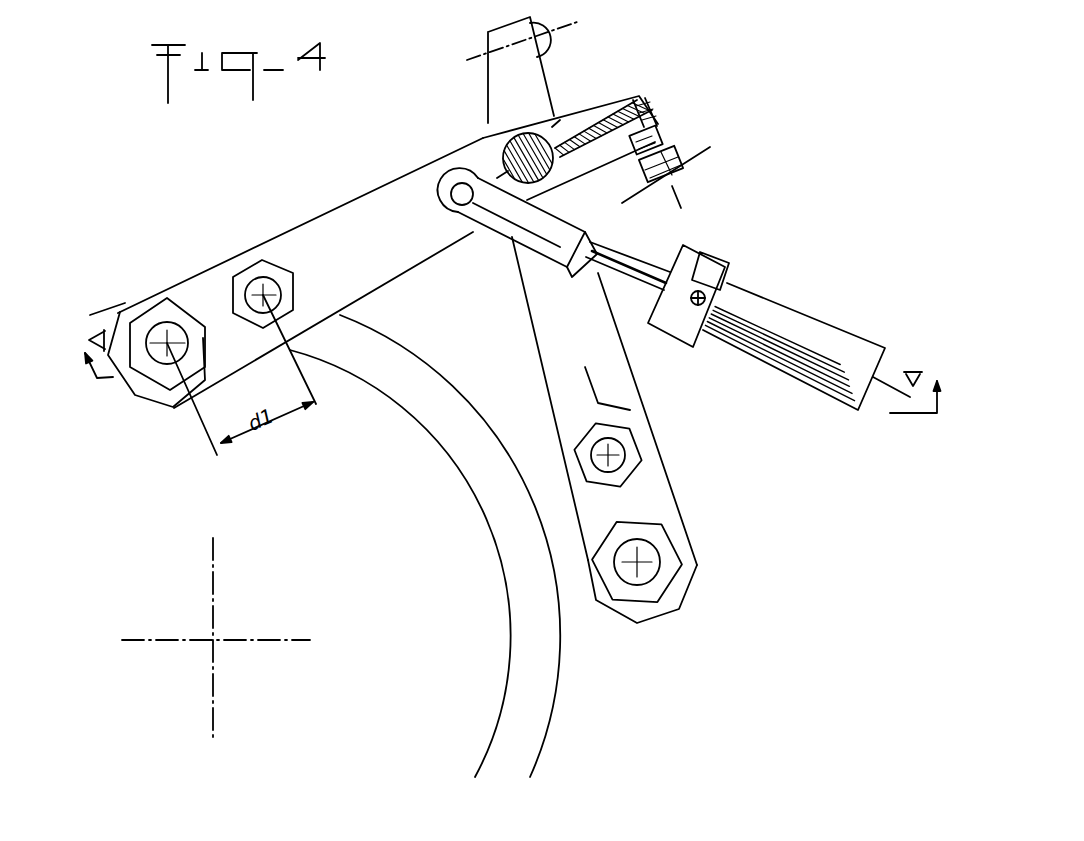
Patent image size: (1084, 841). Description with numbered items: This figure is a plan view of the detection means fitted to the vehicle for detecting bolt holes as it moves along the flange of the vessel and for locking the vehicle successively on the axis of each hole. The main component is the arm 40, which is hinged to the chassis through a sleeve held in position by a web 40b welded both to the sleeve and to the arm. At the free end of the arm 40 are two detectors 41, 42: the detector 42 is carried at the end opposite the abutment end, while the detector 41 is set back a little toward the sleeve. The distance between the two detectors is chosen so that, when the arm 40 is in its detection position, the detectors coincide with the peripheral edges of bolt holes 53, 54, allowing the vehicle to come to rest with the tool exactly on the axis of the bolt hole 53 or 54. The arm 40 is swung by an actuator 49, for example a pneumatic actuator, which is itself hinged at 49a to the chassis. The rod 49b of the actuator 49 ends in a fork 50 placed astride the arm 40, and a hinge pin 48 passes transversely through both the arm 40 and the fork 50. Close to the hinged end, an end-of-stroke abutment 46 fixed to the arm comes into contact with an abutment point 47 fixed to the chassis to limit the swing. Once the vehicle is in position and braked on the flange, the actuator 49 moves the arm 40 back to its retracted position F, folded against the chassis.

The arm 40 is at (311, 240).
The web 40b is at (578, 140).
The detector 41 is at (244, 284).
The detector 42 is at (155, 324).
The end-of-stroke abutment 46 is at (660, 132).
The abutment point 47 is at (681, 158).
The hinge pin 48 is at (458, 192).
The actuator 49 is at (713, 270).
The hinge of the actuator 49a is at (727, 294).
The rod 49b is at (623, 258).
The fork 50 is at (502, 232).
The bolt hole 53 is at (435, 445).
The bolt hole 54 is at (458, 393).
The retracted position F is at (683, 602).